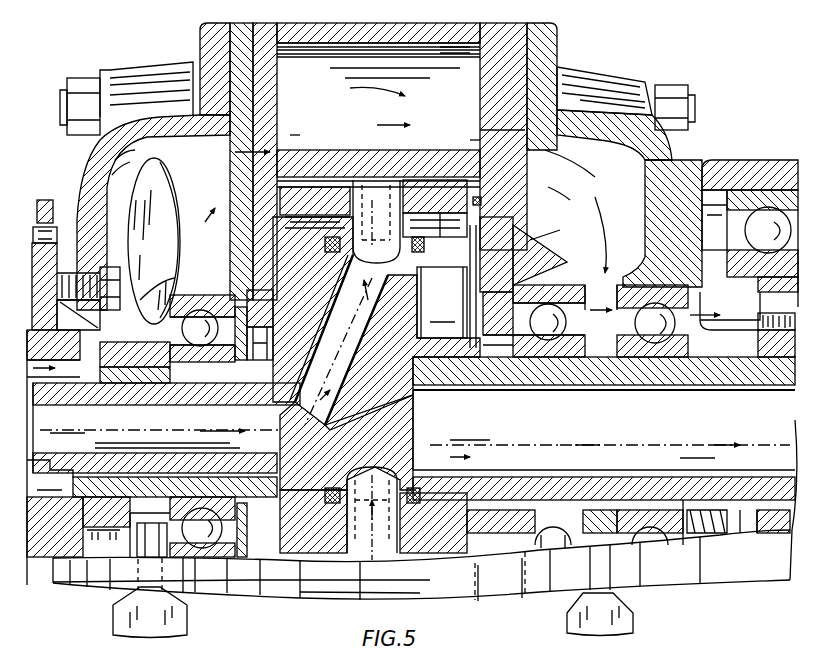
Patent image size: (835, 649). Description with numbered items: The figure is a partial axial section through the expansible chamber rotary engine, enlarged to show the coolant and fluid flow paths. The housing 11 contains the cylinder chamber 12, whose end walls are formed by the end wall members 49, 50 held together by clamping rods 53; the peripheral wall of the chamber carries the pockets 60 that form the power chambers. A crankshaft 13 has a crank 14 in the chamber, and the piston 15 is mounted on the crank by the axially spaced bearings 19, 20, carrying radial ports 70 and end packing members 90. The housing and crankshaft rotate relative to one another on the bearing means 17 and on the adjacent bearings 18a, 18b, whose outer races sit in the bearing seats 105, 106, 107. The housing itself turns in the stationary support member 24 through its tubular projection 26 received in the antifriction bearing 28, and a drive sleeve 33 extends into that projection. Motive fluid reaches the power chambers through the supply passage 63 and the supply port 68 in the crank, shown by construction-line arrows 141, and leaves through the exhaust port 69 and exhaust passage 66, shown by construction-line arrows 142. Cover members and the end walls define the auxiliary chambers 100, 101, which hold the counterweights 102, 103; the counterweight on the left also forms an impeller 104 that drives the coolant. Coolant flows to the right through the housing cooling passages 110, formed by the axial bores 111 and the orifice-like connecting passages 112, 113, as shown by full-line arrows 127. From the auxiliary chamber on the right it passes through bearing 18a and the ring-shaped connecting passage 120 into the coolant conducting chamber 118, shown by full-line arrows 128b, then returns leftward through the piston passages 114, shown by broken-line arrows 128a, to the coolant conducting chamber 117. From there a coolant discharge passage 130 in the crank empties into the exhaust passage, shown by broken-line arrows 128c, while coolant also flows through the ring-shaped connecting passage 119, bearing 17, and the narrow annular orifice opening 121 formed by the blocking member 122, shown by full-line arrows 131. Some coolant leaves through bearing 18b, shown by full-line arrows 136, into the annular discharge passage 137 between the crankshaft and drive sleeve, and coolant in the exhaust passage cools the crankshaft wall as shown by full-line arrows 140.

The housing 11 is at (558, 43).
The cylinder chamber 12 is at (477, 181).
The crankshaft 13 is at (662, 488).
The crank 14 is at (461, 252).
The piston 15 is at (294, 187).
The bearing means 17 is at (200, 316).
The bearing 18a is at (535, 358).
The bearing 18b is at (655, 358).
The bearing 19 is at (315, 206).
The bearing 20 is at (435, 211).
The stationary support member 24 is at (788, 160).
The tubular projection 26 is at (777, 288).
The antifriction bearing 28 is at (762, 160).
The drive sleeve 33 is at (755, 322).
The end wall member 49 is at (258, 24).
The end wall member 50 is at (493, 32).
The clamping rods 53 is at (688, 113).
The pockets 60 is at (500, 141).
The supply passage 63 is at (320, 463).
The exhaust passage 66 is at (585, 464).
The supply port 68 is at (419, 281).
The exhaust port 69 is at (407, 471).
The ports 70 is at (435, 196).
The packing members 90 is at (481, 201).
The auxiliary chamber 100 is at (117, 163).
The auxiliary chamber 101 is at (632, 161).
The counterweight 102 is at (113, 621).
The counterweight 103 is at (633, 617).
The impeller 104 is at (167, 211).
The bearing seat 105 is at (215, 300).
The bearing seat 106 is at (565, 277).
The bearing seat 107 is at (632, 287).
The cooling passages 110 is at (340, 43).
The axial bores 111 is at (443, 43).
The connecting passage 112 is at (237, 152).
The connecting passage 113 is at (507, 140).
The piston passages 114 is at (323, 160).
The coolant conducting chamber 117 is at (180, 273).
The coolant conducting chamber 118 is at (480, 270).
The connecting passage 119 is at (283, 355).
The connecting passage 120 is at (490, 350).
The orifice opening 121 is at (255, 360).
The blocking member 122 is at (247, 306).
The full-line arrows 127 is at (281, 143).
The broken-line arrows 128a is at (374, 224).
The full-line arrows 128b is at (497, 343).
The broken-line arrows 128c is at (392, 485).
The coolant discharge passage 130 is at (375, 353).
The full-line arrows 131 is at (197, 362).
The full-line arrows 136 is at (775, 312).
The annular discharge passage 137 is at (772, 383).
The full-line arrows 140 is at (453, 391).
The construction-line arrows 141 is at (196, 425).
The construction-line arrows 142 is at (692, 453).